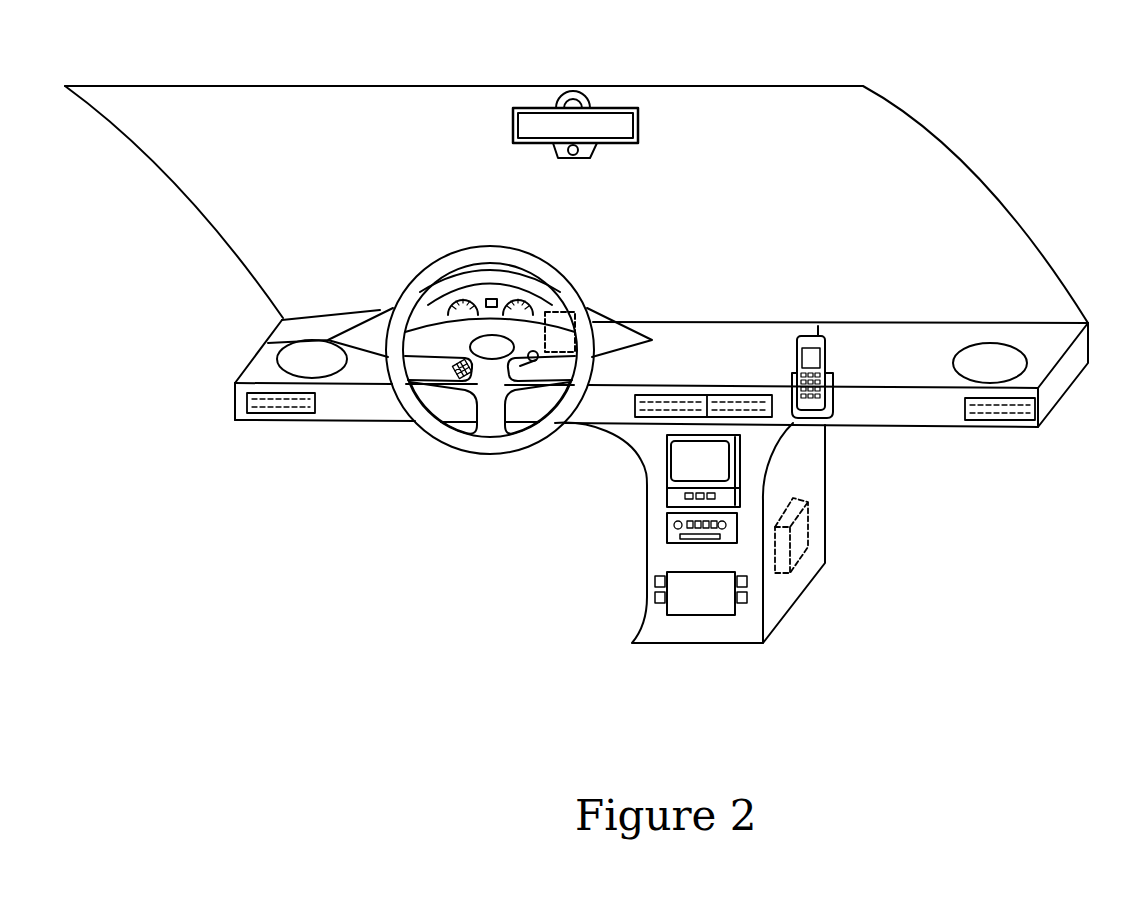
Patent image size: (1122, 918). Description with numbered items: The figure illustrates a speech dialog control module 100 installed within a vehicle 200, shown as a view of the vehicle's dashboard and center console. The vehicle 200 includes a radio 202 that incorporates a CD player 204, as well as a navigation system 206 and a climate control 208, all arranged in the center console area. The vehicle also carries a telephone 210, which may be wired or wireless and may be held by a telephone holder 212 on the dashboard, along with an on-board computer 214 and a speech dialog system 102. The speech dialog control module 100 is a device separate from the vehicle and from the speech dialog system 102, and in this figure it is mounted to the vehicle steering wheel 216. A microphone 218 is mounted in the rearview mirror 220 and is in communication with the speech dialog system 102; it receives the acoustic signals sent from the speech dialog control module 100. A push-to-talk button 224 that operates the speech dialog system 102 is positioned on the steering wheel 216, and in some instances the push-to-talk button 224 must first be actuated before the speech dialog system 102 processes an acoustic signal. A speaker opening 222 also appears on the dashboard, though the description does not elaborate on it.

The speech dialog control module 100 is at (491, 299).
The speech dialog system 102 is at (793, 528).
The vehicle 200 is at (1052, 81).
The radio 202 is at (737, 542).
The CD player 204 is at (722, 545).
The navigation system 206 is at (667, 480).
The climate control 208 is at (718, 612).
The telephone 210 is at (826, 355).
The telephone holder 212 is at (830, 418).
The on-board computer 214 is at (488, 246).
The vehicle steering wheel 216 is at (422, 424).
The microphone 218 is at (548, 312).
The rearview mirror 220 is at (636, 108).
The speaker 222 is at (268, 343).
The push-to-talk button 224 is at (535, 362).